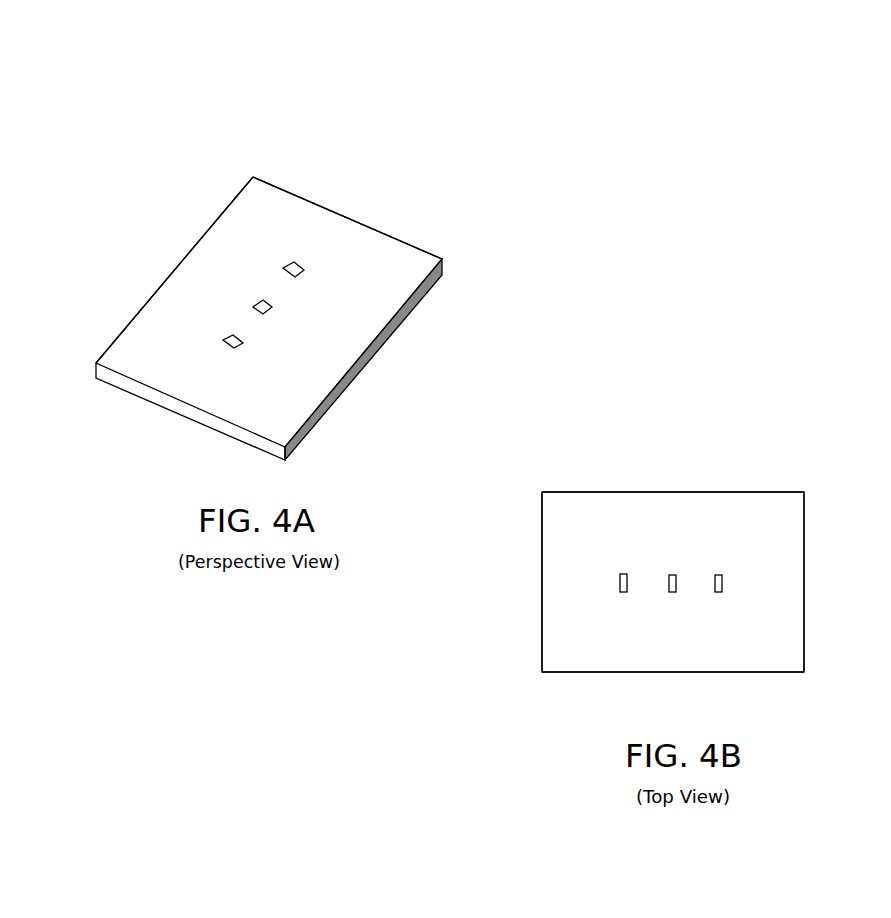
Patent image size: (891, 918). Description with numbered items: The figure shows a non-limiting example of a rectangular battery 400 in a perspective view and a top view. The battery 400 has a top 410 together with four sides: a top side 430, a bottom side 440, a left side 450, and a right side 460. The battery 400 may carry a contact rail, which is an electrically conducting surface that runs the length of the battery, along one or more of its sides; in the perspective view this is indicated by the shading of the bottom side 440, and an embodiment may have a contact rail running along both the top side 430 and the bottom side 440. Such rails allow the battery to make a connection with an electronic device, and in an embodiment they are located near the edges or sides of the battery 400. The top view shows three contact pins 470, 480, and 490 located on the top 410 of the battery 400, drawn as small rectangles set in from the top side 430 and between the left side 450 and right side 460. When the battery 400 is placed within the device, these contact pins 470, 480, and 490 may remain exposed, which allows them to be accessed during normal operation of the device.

In FIG. 4A, the battery 400 is at (245, 172).
In FIG. 4B, the battery 400 is at (538, 509).
In FIG. 4A, the top 410 is at (402, 270).
In FIG. 4B, the top 410 is at (781, 513).
In FIG. 4A, the top side 430 is at (195, 243).
In FIG. 4B, the top side 430 is at (710, 492).
In FIG. 4A, the bottom side 440 is at (410, 320).
In FIG. 4B, the bottom side 440 is at (708, 672).
In FIG. 4A, the left side 450 is at (128, 395).
In FIG. 4B, the left side 450 is at (542, 577).
In FIG. 4A, the right side 460 is at (318, 205).
In FIG. 4B, the right side 460 is at (804, 577).
In FIG. 4B, the contact pin 470 is at (618, 567).
In FIG. 4B, the contact pin 480 is at (669, 567).
In FIG. 4B, the contact pin 490 is at (716, 567).